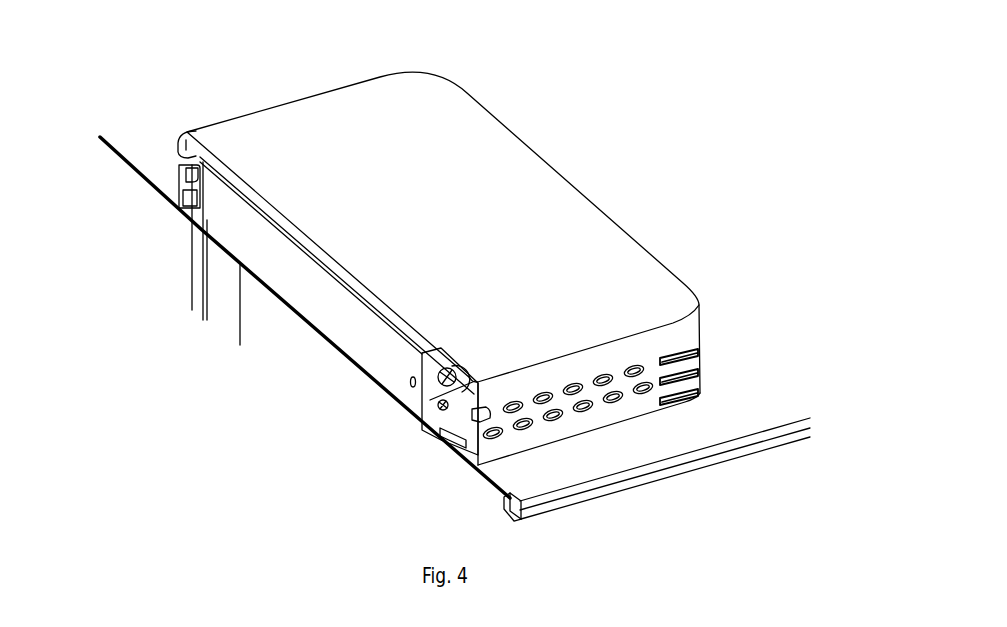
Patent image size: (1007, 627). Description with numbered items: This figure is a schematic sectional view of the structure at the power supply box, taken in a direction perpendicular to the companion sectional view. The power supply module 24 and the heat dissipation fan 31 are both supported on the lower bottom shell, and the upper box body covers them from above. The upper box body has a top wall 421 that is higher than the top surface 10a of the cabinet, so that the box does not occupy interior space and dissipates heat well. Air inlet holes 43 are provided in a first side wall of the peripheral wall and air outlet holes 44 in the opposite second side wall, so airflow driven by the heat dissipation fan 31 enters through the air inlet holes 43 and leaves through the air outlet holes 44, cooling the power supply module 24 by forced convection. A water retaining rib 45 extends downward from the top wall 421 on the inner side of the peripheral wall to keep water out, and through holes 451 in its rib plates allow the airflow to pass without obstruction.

The top wall 421 is at (347, 97).
The air inlet holes 43 is at (186, 156).
The water retaining rib 45 is at (187, 165).
The through holes 451 is at (190, 200).
The power supply module 24 is at (337, 318).
The heat dissipation fan 31 is at (418, 412).
The air outlet holes 44 is at (587, 408).
The top surface 10a is at (690, 433).